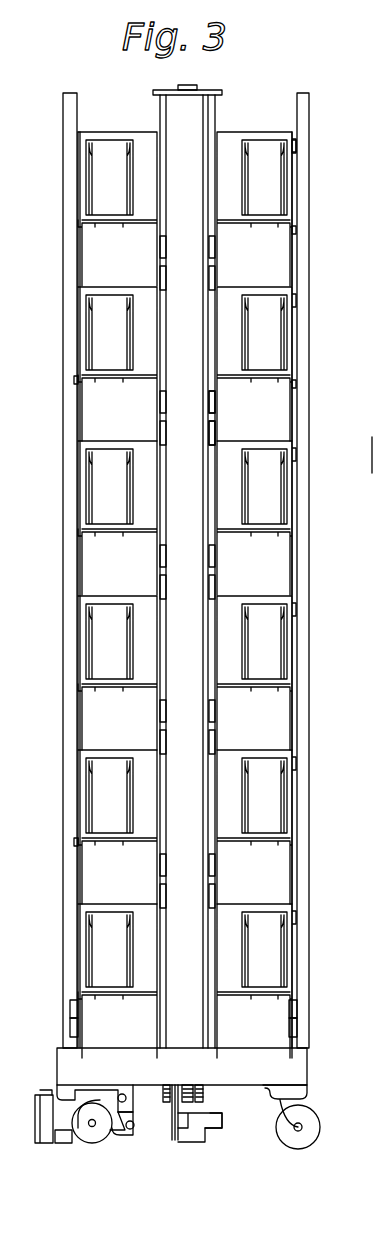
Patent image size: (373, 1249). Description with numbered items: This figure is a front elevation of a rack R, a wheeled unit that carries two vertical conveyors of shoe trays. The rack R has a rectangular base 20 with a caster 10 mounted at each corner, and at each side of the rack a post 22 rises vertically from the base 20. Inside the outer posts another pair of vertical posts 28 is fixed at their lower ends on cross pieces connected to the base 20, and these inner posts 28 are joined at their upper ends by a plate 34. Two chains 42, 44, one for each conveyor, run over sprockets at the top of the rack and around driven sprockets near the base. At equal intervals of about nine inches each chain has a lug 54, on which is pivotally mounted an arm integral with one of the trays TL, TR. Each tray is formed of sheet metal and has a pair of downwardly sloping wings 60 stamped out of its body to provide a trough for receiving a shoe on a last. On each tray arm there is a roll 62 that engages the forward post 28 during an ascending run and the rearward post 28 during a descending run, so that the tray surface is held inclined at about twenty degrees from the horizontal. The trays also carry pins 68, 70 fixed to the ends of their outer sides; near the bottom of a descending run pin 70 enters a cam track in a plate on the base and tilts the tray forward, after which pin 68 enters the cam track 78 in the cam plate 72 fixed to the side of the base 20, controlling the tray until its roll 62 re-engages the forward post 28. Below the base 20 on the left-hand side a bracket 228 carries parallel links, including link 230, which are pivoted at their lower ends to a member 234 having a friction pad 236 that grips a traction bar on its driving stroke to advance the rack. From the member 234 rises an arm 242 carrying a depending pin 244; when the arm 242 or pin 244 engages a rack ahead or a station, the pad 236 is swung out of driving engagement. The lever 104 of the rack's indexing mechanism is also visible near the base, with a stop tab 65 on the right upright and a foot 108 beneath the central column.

The plate 34 is at (215, 91).
The stop tab 65 is at (296, 150).
The tray TR is at (268, 290).
The pin 70 is at (295, 297).
The pin 68 is at (297, 384).
The tray TL is at (130, 401).
The roll 62 is at (213, 403).
The lug 54 is at (213, 443).
The depending pin 244 is at (46, 1092).
The arm 242 is at (40, 1150).
The post 22 is at (64, 592).
The downwardly sloping wings 60 is at (250, 659).
The vertical posts 28 is at (190, 735).
The rack R is at (319, 918).
The cam track 78 is at (72, 1013).
The cam plate 72 is at (70, 1030).
The bracket 228 is at (113, 1090).
The chain 42 is at (173, 1085).
The link 230 is at (134, 1117).
The chain 44 is at (200, 1088).
The base 20 is at (306, 1070).
The caster 10 is at (319, 1123).
The pad 236 is at (72, 1141).
The member 234 is at (138, 1141).
The foot 108 is at (181, 1138).
The lever 104 is at (218, 1129).